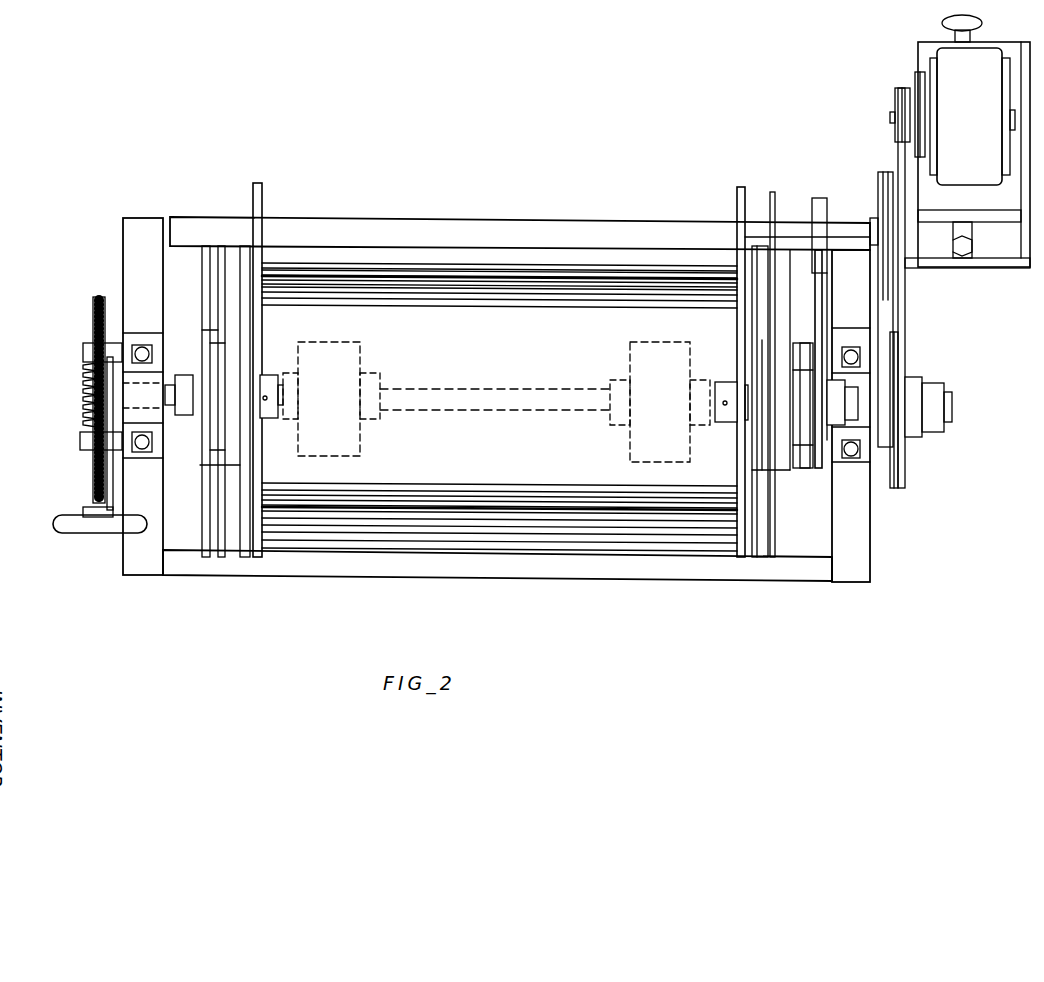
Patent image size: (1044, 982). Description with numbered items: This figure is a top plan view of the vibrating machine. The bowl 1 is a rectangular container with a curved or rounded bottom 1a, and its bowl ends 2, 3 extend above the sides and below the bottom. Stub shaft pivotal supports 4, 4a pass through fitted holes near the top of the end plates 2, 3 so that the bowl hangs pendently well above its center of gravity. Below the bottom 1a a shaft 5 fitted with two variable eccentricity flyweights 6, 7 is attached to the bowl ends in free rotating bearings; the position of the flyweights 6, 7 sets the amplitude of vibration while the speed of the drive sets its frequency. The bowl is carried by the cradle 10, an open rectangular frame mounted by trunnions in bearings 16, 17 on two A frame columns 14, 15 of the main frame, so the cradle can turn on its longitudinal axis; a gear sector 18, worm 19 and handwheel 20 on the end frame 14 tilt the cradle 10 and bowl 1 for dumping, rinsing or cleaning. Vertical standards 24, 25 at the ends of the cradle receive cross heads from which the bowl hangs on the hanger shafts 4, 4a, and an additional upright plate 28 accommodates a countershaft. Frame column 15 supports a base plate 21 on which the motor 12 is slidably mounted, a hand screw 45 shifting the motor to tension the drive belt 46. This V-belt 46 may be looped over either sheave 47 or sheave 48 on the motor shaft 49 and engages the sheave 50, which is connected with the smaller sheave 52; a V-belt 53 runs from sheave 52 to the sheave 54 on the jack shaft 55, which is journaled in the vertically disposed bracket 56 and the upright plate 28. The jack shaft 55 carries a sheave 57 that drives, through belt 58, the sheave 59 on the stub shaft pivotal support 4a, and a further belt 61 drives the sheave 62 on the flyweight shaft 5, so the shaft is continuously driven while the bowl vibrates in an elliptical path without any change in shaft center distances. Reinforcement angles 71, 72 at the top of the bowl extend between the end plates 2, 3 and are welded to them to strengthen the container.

The bowl 1 is at (470, 308).
The curved bottom 1a is at (538, 452).
The bowl end 2 is at (262, 196).
The bowl end 3 is at (735, 205).
The stub shaft pivotal support 4 is at (290, 402).
The stub shaft pivotal support 4a is at (710, 407).
The shaft 5 is at (420, 390).
The variable eccentricity flyweight 6 is at (360, 442).
The variable eccentricity flyweight 7 is at (620, 444).
The cradle 10 is at (395, 232).
The motor 12 is at (960, 126).
The A frame column 14 is at (125, 560).
The A frame column 15 is at (860, 540).
The bearing 16 is at (148, 385).
The bearing 17 is at (868, 372).
The gear sector 18 is at (96, 308).
The worm 19 is at (90, 396).
The handwheel 20 is at (72, 528).
The base plate 21 is at (1000, 258).
The standard 24 is at (208, 435).
The standard 25 is at (760, 440).
The upright plate 28 is at (772, 192).
The hand screw 45 is at (940, 25).
The drive belt 46 is at (897, 150).
The sheave 47 is at (897, 90).
The sheave 48 is at (915, 82).
The motor shaft 49 is at (890, 115).
The sheave 50 is at (905, 466).
The sheave 52 is at (900, 400).
The V-belt 53 is at (888, 318).
The sheave 54 is at (885, 195).
The jack shaft 55 is at (797, 237).
The bracket 56 is at (860, 322).
The sheave 57 is at (827, 198).
The belt 58 is at (815, 308).
The sheave 59 is at (825, 465).
The belt 61 is at (746, 342).
The sheave 62 is at (807, 470).
The reinforcement angle 71 is at (565, 272).
The reinforcement angle 72 is at (365, 515).